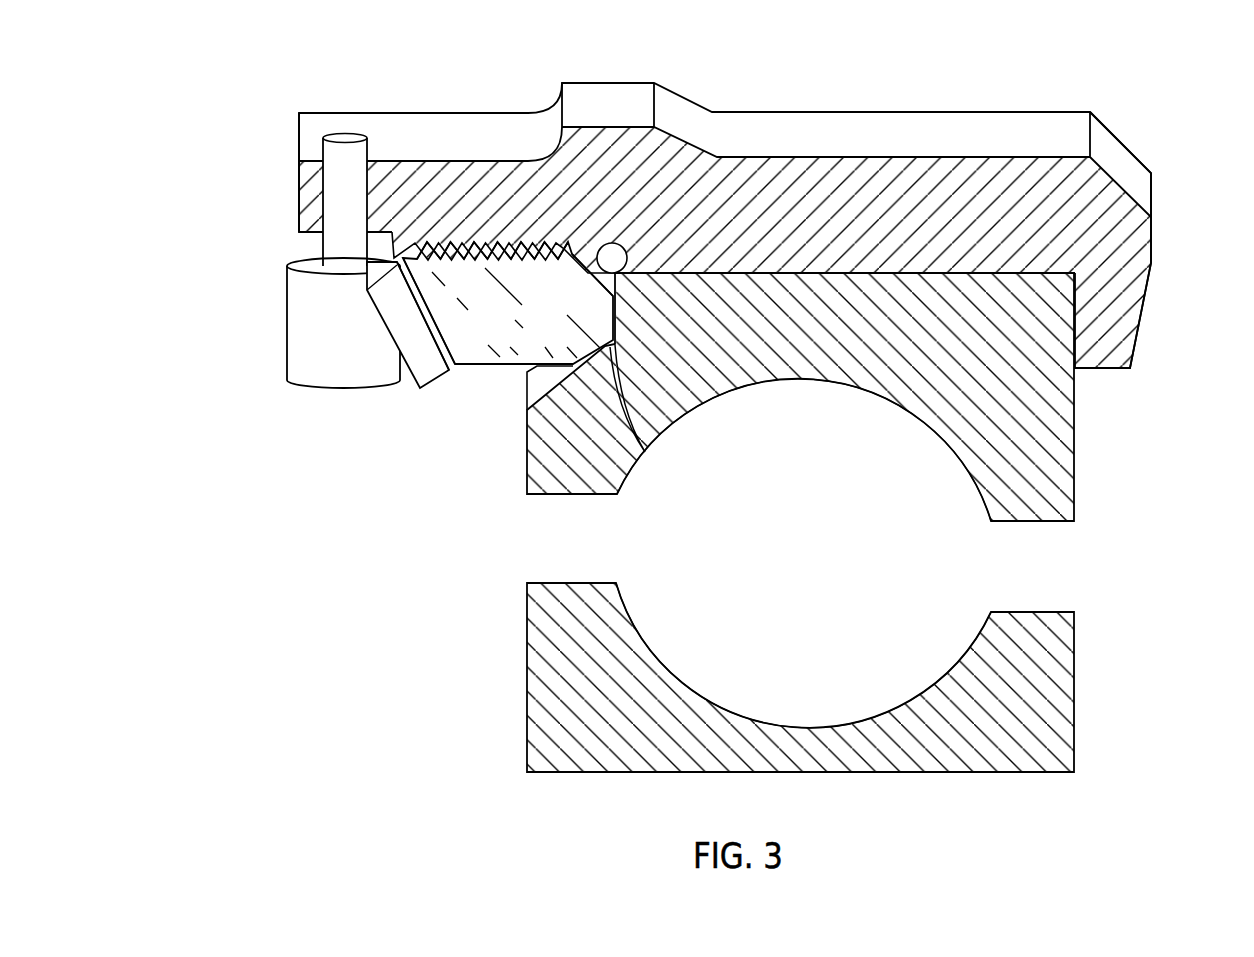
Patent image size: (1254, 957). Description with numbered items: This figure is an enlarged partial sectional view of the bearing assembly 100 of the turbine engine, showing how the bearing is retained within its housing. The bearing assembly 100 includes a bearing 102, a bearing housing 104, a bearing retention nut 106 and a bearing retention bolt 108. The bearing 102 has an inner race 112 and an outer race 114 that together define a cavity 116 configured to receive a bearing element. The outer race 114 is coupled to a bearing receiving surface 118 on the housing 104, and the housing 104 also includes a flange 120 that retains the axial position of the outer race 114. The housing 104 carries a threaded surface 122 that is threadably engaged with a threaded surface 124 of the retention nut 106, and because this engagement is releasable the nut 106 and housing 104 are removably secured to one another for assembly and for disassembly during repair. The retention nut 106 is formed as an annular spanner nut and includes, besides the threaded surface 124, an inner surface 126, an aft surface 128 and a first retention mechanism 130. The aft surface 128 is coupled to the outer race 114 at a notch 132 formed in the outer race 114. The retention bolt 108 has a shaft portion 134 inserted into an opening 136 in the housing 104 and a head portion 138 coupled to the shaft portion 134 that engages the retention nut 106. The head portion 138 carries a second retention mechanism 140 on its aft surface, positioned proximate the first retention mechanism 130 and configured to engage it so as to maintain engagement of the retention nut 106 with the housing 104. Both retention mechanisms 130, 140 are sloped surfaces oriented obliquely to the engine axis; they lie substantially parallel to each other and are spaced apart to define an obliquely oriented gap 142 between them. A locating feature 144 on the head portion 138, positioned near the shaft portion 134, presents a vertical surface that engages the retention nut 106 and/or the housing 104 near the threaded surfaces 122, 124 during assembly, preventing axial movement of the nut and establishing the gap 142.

The bearing assembly 100 is at (667, 203).
The bearing 102 is at (829, 522).
The bearing housing 104 is at (721, 219).
The bearing retention nut 106 is at (499, 325).
The bearing retention bolt 108 is at (345, 342).
The inner race 112 is at (1048, 698).
The outer race 114 is at (797, 397).
The cavity 116 is at (822, 573).
The bearing receiving surface 118 is at (912, 271).
The flange 120 is at (1120, 321).
The threaded surface 122 is at (510, 240).
The threaded surface 124 is at (586, 247).
The inner surface 126 is at (517, 367).
The aft surface 128 is at (600, 302).
The first retention mechanism 130 is at (447, 368).
The notch 132 is at (642, 445).
The shaft portion 134 is at (343, 150).
The opening 136 is at (300, 211).
The head portion 138 is at (295, 301).
The second retention mechanism 140 is at (426, 331).
The gap 142 is at (438, 342).
The locating feature 144 is at (385, 282).